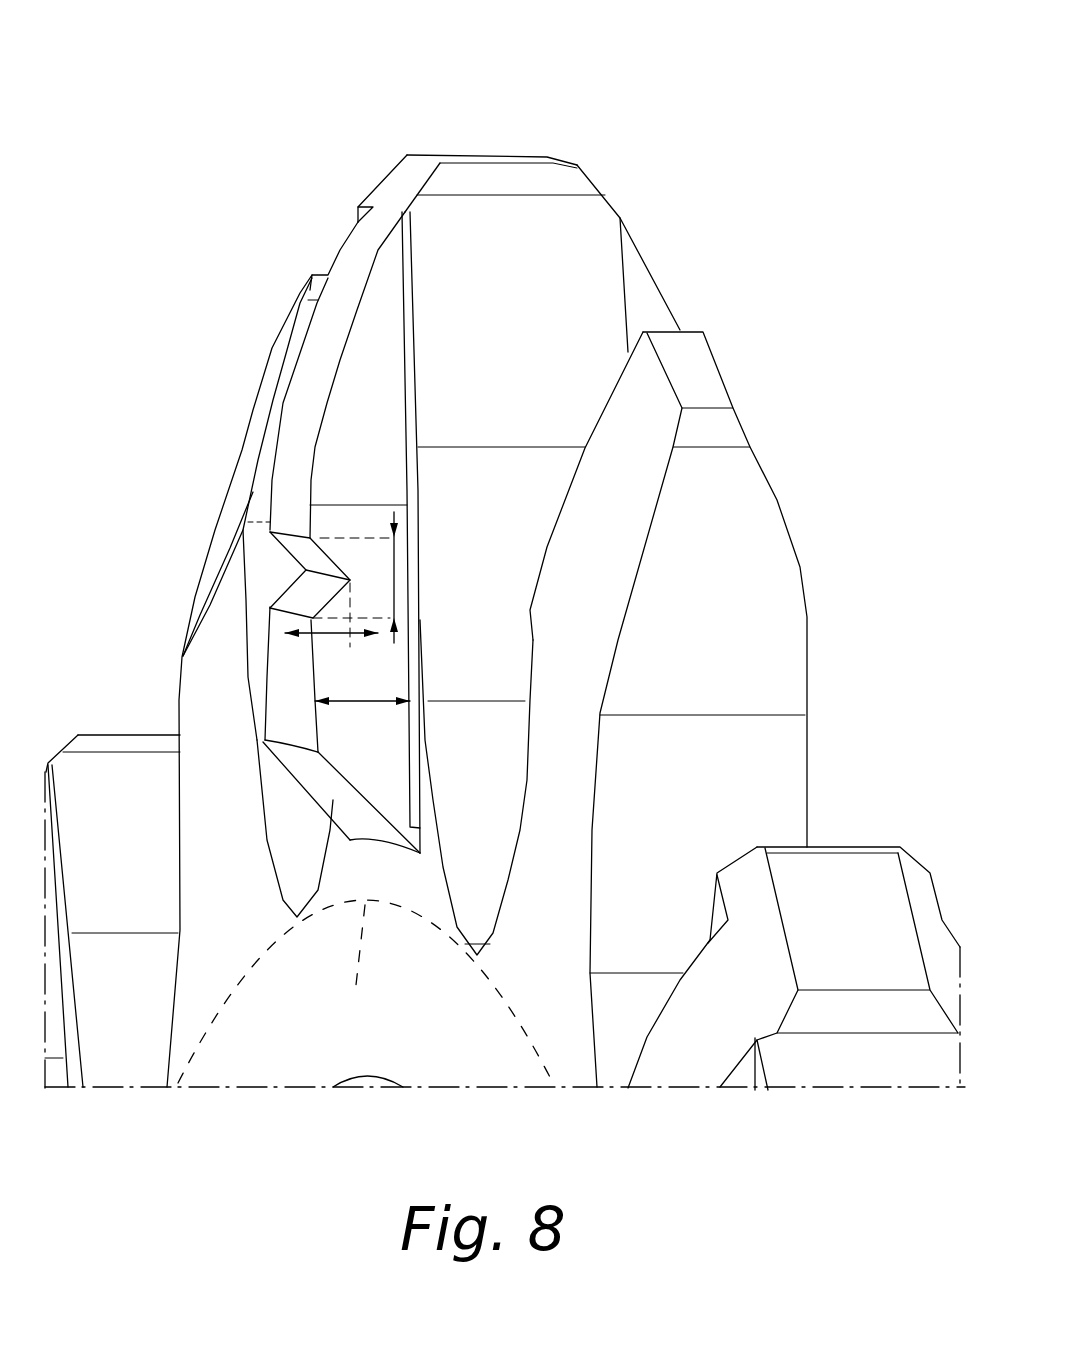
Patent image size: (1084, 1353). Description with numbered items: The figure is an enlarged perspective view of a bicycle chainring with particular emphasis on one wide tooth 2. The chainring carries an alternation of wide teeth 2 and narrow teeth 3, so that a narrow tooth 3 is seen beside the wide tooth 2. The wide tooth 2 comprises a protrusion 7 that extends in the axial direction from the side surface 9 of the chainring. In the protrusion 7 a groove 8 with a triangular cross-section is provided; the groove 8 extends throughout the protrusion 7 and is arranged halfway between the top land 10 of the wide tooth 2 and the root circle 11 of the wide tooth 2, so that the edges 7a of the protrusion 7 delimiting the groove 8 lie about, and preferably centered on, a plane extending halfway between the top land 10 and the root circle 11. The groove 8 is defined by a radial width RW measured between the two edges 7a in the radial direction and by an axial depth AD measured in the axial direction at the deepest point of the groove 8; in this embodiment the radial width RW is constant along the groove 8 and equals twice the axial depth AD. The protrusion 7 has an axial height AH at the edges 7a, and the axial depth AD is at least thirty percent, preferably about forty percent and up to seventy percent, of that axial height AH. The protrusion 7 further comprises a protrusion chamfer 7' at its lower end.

The wide tooth 2 is at (570, 124).
The top land 10 is at (483, 157).
The narrow tooth 3 is at (785, 497).
The protrusion 7 is at (286, 649).
The edges of the protrusion 7a is at (247, 530).
The groove 8 is at (285, 568).
The protrusion chamfer 7' is at (312, 828).
The side surface 9 is at (427, 828).
The root circle 11 is at (365, 993).
The radial width RW is at (398, 581).
The axial depth AD is at (317, 643).
The axial height AH is at (362, 703).